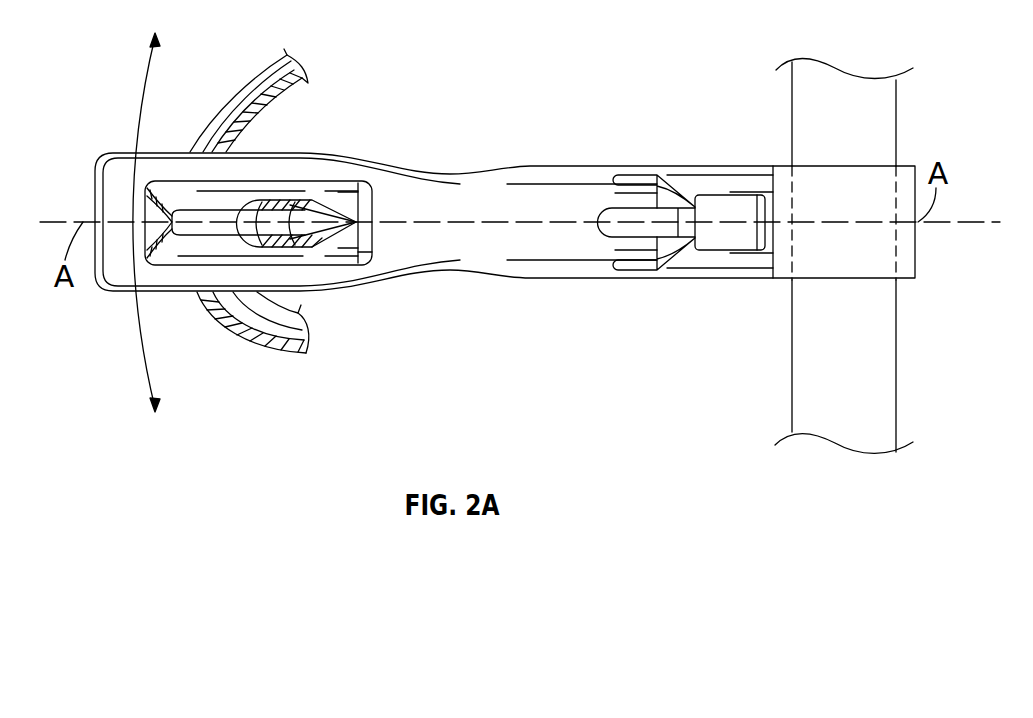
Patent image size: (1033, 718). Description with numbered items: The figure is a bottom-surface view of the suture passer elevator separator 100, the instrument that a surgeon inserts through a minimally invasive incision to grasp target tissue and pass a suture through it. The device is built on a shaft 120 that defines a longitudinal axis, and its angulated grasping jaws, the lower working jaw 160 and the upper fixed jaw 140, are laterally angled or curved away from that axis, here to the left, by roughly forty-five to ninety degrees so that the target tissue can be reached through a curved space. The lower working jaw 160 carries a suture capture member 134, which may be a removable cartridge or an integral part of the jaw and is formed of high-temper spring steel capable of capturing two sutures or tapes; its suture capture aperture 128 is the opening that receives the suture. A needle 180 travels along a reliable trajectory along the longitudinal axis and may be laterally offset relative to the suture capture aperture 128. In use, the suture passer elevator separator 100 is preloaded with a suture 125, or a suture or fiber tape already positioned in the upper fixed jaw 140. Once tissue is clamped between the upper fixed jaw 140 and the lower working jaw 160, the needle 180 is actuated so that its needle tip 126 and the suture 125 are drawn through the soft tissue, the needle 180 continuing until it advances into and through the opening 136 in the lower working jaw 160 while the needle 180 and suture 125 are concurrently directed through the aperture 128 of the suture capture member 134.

The suture passer elevator separator 100 is at (111, 43).
The shaft 120 is at (897, 407).
The suture 125 is at (250, 80).
The needle tip 126 is at (373, 222).
The suture capture aperture 128 is at (168, 223).
The suture capture member 134 is at (195, 190).
The opening 136 is at (358, 253).
The upper fixed jaw 140 is at (623, 166).
The lower working jaw 160 is at (392, 163).
The needle 180 is at (218, 208).